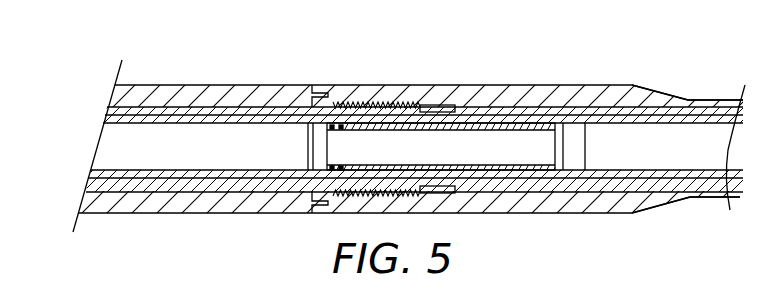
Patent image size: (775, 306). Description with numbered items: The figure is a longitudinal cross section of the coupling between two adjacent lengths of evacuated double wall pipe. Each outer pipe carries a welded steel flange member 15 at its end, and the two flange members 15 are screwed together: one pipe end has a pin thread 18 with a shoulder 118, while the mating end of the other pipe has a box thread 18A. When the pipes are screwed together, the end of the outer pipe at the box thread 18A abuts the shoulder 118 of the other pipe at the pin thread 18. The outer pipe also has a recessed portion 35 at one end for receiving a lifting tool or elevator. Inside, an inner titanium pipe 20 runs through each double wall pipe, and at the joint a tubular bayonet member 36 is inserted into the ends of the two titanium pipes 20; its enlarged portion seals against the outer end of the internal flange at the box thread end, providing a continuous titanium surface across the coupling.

The flange member 15 is at (220, 85).
The shoulder 118 is at (313, 95).
The box thread 18A is at (345, 103).
The pin thread 18 is at (400, 105).
The recessed portion 35 is at (700, 97).
The titanium pipe 20 is at (632, 123).
The tubular bayonet member 36 is at (448, 147).